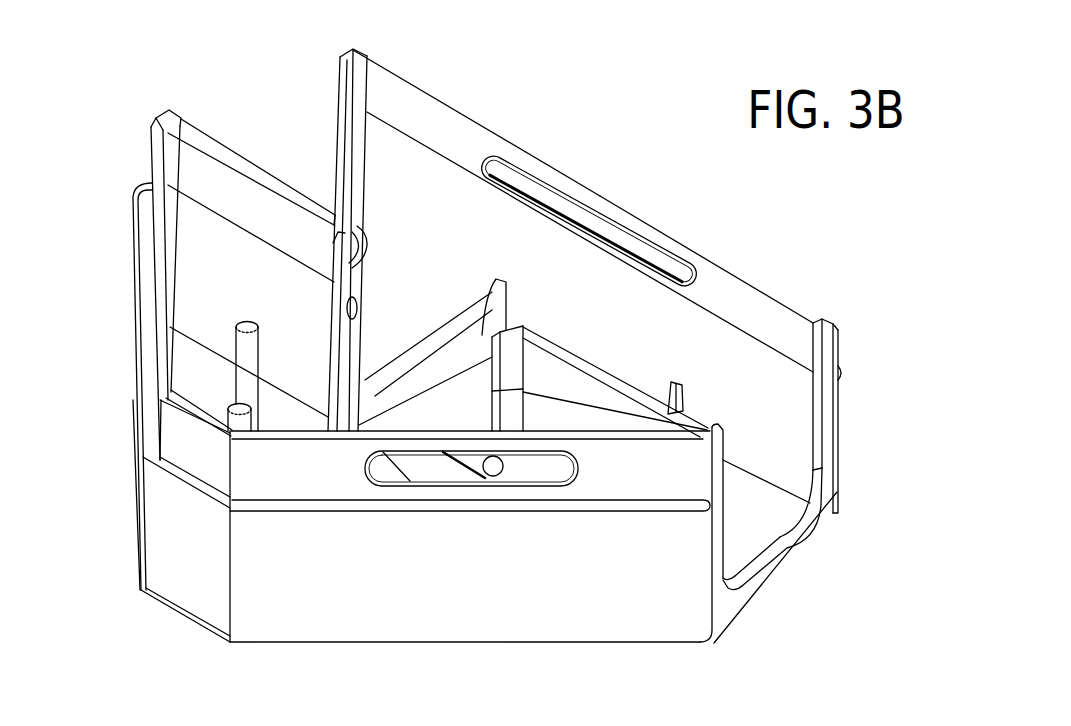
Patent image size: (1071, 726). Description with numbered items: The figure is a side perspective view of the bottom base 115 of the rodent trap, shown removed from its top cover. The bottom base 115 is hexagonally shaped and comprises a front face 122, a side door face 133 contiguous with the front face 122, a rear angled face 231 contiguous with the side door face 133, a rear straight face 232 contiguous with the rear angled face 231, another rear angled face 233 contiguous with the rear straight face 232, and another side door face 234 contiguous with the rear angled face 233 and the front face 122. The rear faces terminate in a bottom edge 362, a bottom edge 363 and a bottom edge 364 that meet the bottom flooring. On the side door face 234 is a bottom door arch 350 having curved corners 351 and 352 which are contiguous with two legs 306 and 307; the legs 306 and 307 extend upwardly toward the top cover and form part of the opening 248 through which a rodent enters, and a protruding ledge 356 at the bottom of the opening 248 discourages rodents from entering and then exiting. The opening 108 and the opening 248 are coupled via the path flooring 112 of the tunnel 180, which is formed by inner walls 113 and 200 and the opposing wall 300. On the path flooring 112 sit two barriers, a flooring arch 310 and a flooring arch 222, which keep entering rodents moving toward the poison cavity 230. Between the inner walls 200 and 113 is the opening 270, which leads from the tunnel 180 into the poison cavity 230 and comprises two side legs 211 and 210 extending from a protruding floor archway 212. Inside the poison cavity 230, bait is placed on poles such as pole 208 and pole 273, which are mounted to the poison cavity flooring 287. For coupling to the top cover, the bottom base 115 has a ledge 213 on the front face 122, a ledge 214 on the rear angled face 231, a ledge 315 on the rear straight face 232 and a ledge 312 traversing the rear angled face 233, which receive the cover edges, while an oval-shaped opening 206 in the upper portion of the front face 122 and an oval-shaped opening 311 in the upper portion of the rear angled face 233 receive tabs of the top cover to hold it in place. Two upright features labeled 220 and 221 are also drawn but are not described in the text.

The opening 108 is at (341, 108).
The path flooring 112 is at (364, 313).
The inner wall 113 is at (221, 277).
The bottom base 115 is at (459, 104).
The front face 122 is at (770, 291).
The side door face 133 is at (163, 119).
The tunnel 180 is at (398, 172).
The inner wall 200 is at (563, 406).
The oval-shaped opening 206 is at (585, 215).
The pole 208 is at (245, 322).
The side leg 210 is at (333, 267).
The side leg 211 is at (490, 320).
The protruding floor archway 212 is at (363, 410).
The ledge 213 is at (838, 372).
The ledge 214 is at (148, 342).
The top rail 220 is at (268, 178).
The post 221 is at (577, 358).
The flooring arch 222 is at (668, 395).
The poison cavity 230 is at (196, 238).
The rear angled face 231 is at (133, 276).
The rear straight face 232 is at (166, 553).
The rear angled face 233 is at (469, 600).
The side door face 234 is at (825, 346).
The opening 248 is at (723, 507).
The opening 270 is at (349, 325).
The pole 273 is at (240, 404).
The poison cavity flooring 287 is at (183, 390).
The opposing wall 300 is at (538, 280).
The leg 306 is at (723, 460).
The leg 307 is at (825, 392).
The flooring arch 310 is at (425, 347).
The oval-shaped opening 311 is at (433, 468).
The ledge 312 is at (280, 505).
The ledge 315 is at (183, 477).
The bottom door arch 350 is at (820, 515).
The curved corner 351 is at (748, 592).
The curved corner 352 is at (813, 492).
The protruding ledge 356 is at (780, 542).
The bottom edge 362 is at (140, 405).
The bottom edge 363 is at (168, 607).
The bottom edge 364 is at (308, 643).